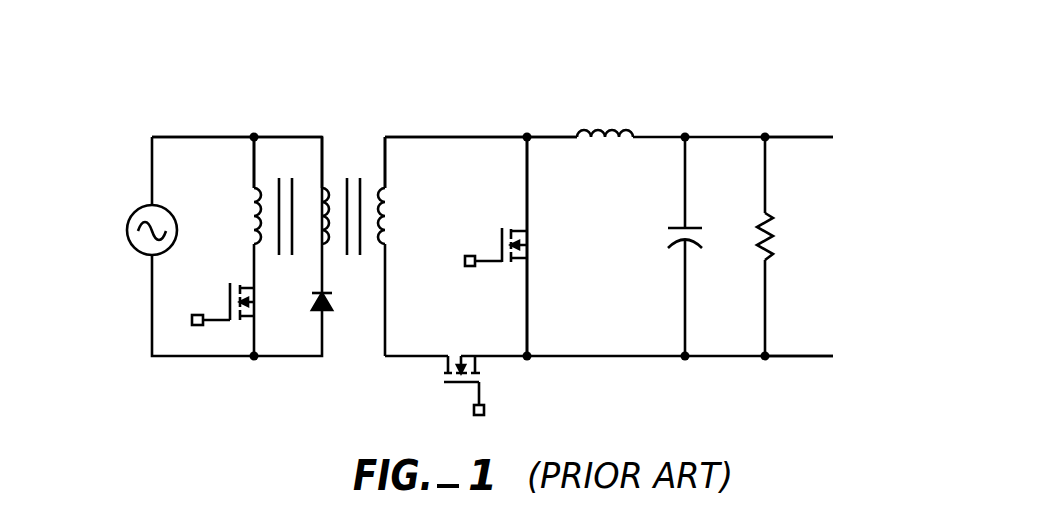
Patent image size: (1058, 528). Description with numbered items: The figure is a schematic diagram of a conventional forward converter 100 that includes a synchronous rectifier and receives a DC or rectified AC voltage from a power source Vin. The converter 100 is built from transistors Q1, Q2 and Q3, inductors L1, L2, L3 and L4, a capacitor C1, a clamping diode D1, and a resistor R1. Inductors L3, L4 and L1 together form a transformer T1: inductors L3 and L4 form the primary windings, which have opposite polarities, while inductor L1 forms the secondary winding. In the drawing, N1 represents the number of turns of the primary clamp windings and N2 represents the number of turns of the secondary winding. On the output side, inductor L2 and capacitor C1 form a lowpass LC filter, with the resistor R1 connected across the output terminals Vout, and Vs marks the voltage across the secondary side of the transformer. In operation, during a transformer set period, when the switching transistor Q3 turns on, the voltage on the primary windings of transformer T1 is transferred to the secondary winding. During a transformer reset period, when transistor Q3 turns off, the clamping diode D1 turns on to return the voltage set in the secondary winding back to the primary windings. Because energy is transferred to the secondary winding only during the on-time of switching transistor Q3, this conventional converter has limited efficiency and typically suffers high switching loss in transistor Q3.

The forward converter 100 is at (752, 53).
The power source Vin is at (126, 233).
The inductor L3 is at (239, 216).
The inductor L4 is at (336, 234).
The inductor L1 is at (401, 216).
The transformer T1 is at (321, 164).
The number of turns of the primary clamp windings N1 is at (283, 149).
The number of turns of the secondary winding N2 is at (387, 149).
The inductor L2 is at (605, 116).
The clamping diode D1 is at (309, 313).
The switching transistor Q3 is at (221, 302).
The transistor Q1 is at (496, 260).
The secondary voltage Vs is at (547, 246).
The transistor Q2 is at (464, 370).
The capacitor C1 is at (668, 236).
The resistor R1 is at (781, 236).
The output voltage terminals Vout is at (840, 247).